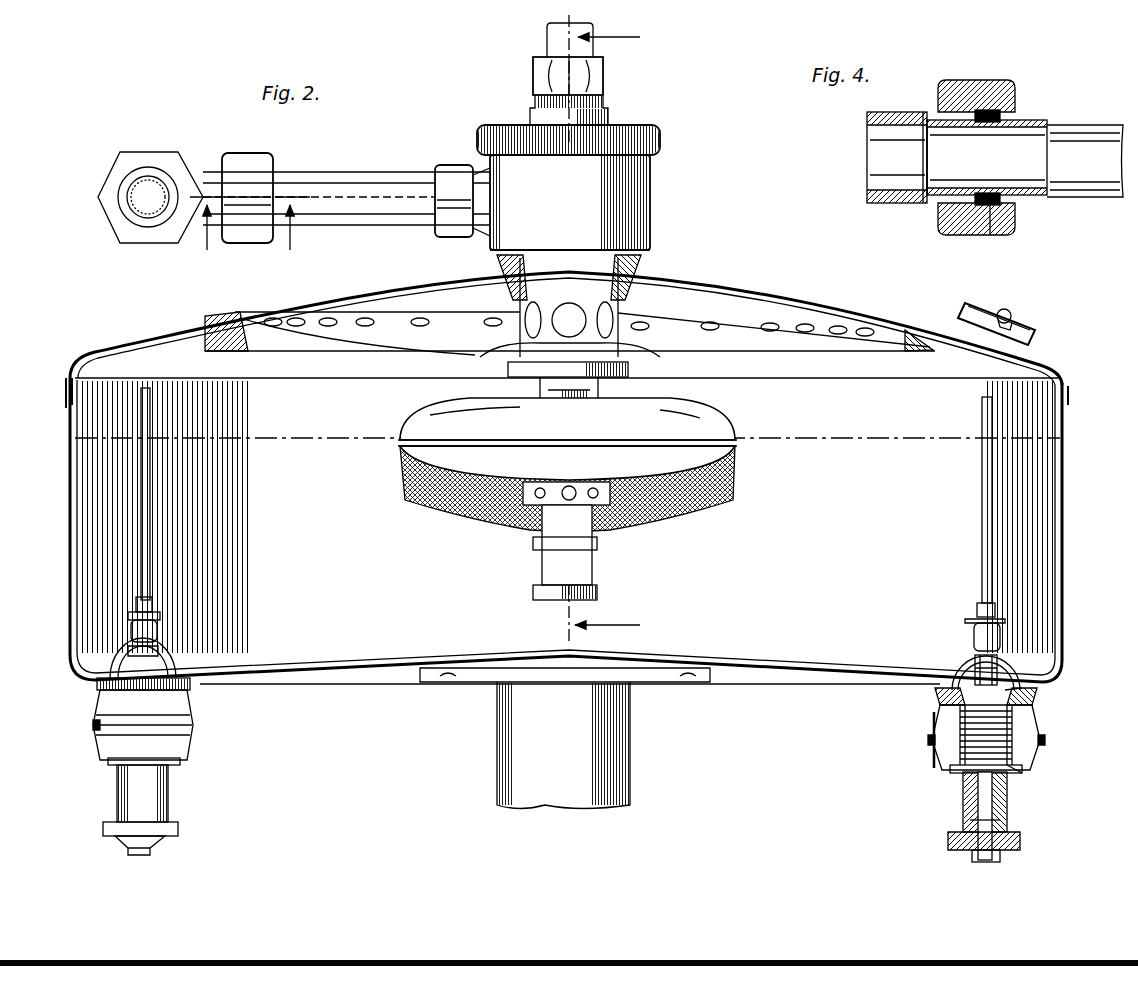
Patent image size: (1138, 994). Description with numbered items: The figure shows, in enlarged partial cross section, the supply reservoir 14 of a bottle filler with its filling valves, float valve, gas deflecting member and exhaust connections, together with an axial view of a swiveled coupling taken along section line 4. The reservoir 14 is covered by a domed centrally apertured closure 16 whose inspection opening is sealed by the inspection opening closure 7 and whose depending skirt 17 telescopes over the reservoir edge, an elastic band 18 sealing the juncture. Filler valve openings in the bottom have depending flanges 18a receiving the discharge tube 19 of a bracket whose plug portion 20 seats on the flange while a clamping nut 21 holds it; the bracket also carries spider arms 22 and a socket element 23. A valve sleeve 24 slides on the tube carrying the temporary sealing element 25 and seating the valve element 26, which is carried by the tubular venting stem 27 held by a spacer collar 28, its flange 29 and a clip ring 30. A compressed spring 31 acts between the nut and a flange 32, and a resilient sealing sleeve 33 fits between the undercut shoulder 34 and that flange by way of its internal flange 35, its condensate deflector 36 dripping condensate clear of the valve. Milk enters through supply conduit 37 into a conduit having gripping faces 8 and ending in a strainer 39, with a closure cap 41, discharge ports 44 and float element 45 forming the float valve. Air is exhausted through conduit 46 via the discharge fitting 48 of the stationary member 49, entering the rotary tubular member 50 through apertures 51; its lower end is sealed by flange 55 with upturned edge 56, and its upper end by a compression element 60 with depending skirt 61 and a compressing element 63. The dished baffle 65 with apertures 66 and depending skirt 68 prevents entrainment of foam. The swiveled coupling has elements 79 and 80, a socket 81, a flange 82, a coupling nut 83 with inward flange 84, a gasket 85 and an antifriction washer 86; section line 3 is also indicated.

In FIG. 2, the section line 3- 3 is at (611, 335).
In FIG. 2, the section line 4— 4 is at (250, 235).
In FIG. 2, the inspection opening closure 7 is at (1022, 333).
In FIG. 2, the gripping faces 8 is at (572, 394).
In FIG. 2, the reservoir 14 is at (1064, 505).
In FIG. 2, the domed centrally apertured closure 16 is at (152, 332).
In FIG. 2, the depending flange or skirt 17 is at (1070, 392).
In FIG. 2, the elastic band 18 is at (67, 385).
In FIG. 2, the depending flange 18a is at (945, 690).
In FIG. 2, the liquid or milk discharge tube 19 is at (965, 780).
In FIG. 2, the plug portion 20 is at (1000, 680).
In FIG. 2, the clamping nut 21 is at (97, 685).
In FIG. 2, the spider arms 22 is at (120, 652).
In FIG. 2, the socket element 23 is at (131, 632).
In FIG. 2, the valve sleeve 24 is at (117, 790).
In FIG. 2, the temporary sealing element 25 is at (178, 842).
In FIG. 2, the valve element 26 is at (128, 852).
In FIG. 2, the tubular valve and venting stem 27 is at (140, 465).
In FIG. 2, the spacer collar 28 is at (136, 604).
In FIG. 2, the flange 29 is at (185, 682).
In FIG. 2, the removable clip ring 30 is at (128, 618).
In FIG. 2, the compressed spring 31 is at (1040, 732).
In FIG. 2, the flange 32 is at (178, 764).
In FIG. 2, the deflecting and sealing sleeve 33 is at (192, 722).
In FIG. 2, the undercut shoulder 34 is at (1032, 708).
In FIG. 2, the internal flange 35 is at (1026, 768).
In FIG. 2, the condensate deflector 36 is at (93, 728).
In FIG. 2, the supply conduit 37 is at (546, 35).
In FIG. 2, the strainer 39 is at (462, 522).
In FIG. 2, the closure cap and valve sleeve stop 41 is at (532, 592).
In FIG. 2, the discharge ports 44 is at (534, 492).
In FIG. 2, the float element 45 is at (672, 472).
In FIG. 2, the conduit 46 is at (360, 186).
In FIG. 2, the discharge fitting 48 is at (480, 230).
In FIG. 2, the stationary member 49 is at (636, 206).
In FIG. 2, the rotary tubular member 50 is at (642, 270).
In FIG. 2, the apertures 51 is at (526, 312).
In FIG. 2, the flange 55 is at (600, 380).
In FIG. 2, the upwardly turned edge 56 is at (506, 368).
In FIG. 2, the compression element 60 is at (604, 122).
In FIG. 2, the depending skirt 61 is at (662, 145).
In FIG. 2, the gasket confining and compressing element 63 is at (604, 76).
In FIG. 2, the upwardly dished baffle element 65 is at (430, 353).
In FIG. 2, the apertures 66 is at (365, 318).
In FIG. 2, the depending skirt 68 is at (272, 342).
In FIG. 4, the coupling element 79 is at (873, 166).
In FIG. 4, the coupling element 80 is at (1100, 186).
In FIG. 4, the socket 81 is at (925, 172).
In FIG. 4, the flange 82 is at (1002, 190).
In FIG. 2, the coupling nut 83 is at (245, 160).
In FIG. 4, the coupling nut 83 is at (982, 92).
In FIG. 4, the inwardly extending flange 84 is at (1006, 120).
In FIG. 4, the resilient annular gasket 85 is at (972, 226).
In FIG. 4, the antifriction washer 86 is at (990, 232).